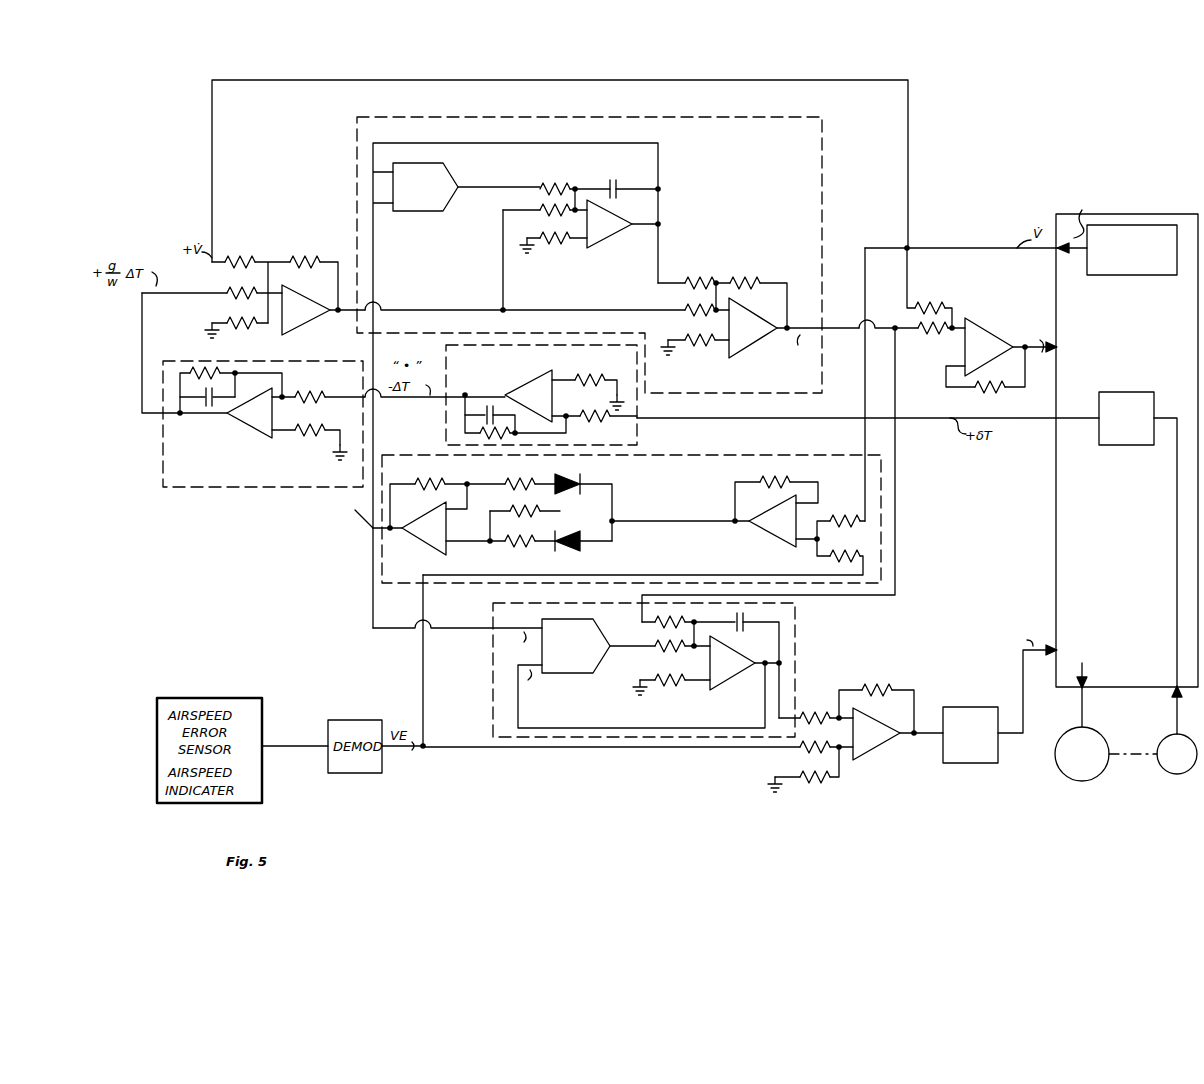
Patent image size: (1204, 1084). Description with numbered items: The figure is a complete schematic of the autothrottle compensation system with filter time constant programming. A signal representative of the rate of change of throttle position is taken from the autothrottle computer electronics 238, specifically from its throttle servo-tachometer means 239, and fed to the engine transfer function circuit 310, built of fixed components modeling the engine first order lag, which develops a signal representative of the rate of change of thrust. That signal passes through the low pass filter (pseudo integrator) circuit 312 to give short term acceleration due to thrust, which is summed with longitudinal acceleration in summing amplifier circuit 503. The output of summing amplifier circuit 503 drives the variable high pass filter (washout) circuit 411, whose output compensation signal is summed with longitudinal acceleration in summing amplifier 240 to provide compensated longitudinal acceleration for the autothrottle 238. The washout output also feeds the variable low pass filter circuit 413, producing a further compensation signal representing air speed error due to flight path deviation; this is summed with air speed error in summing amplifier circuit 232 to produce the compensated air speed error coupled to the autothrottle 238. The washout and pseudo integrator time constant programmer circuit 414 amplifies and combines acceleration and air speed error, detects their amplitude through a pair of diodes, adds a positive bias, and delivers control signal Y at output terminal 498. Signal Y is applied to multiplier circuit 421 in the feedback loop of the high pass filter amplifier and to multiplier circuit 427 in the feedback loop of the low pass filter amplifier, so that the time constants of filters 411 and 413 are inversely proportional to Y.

The summing amplifier circuit 503 is at (253, 297).
The low pass filter (pseudo integrator) circuit 312 is at (230, 488).
The variable high pass filter (washout) circuit 411 is at (615, 246).
The multiplier circuit 421 is at (458, 182).
The engine transfer function circuit 310 is at (637, 436).
The washout and pseudo integrator time constant programmer circuit 414 is at (628, 519).
The output terminal 498 is at (373, 530).
The variable low pass filter (pseudo integrator) circuit 413 is at (606, 668).
The multiplier circuit 427 is at (603, 640).
The summing amplifier circuit 232 is at (740, 726).
The summing amplifier 240 is at (981, 331).
The autothrottle computer electronics 238 is at (1140, 570).
The throttle servo-tachometer means 239 is at (1129, 600).